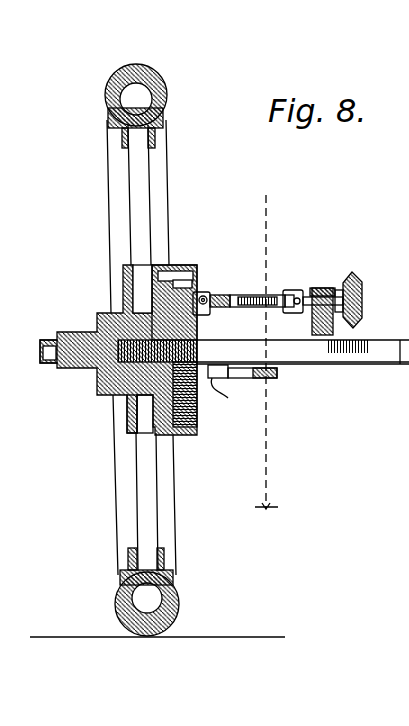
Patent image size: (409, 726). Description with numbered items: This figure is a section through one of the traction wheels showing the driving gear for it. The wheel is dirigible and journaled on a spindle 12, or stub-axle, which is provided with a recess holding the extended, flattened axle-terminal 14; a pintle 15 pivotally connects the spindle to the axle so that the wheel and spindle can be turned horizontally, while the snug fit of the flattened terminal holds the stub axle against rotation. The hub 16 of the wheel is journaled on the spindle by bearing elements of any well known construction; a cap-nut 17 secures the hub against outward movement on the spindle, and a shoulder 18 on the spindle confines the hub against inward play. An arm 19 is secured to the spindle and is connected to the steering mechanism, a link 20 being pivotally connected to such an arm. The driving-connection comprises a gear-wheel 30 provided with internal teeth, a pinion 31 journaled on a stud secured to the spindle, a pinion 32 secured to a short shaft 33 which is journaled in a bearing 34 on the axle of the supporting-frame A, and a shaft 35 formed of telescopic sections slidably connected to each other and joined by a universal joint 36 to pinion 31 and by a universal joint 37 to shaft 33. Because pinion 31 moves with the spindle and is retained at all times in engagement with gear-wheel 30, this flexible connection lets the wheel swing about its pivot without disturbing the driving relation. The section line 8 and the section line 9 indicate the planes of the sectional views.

The section line 8 is at (265, 260).
The section line 9 is at (266, 443).
The spindle 12 is at (230, 220).
The axle-terminal 14 is at (112, 397).
The pintle 15 is at (147, 393).
The hub 16 is at (82, 330).
The cap-nut 17 is at (50, 372).
The shoulder 18 is at (53, 337).
The arm 19 is at (200, 385).
The link 20 is at (276, 374).
The gear-wheel 30 is at (200, 433).
The pinion 31 is at (200, 277).
The pinion 32 is at (366, 294).
The short shaft 33 is at (300, 288).
The bearing 34 is at (323, 336).
The shaft 35 is at (265, 291).
The universal joint 36 is at (222, 292).
The universal joint 37 is at (320, 288).
The supporting-frame A is at (392, 364).